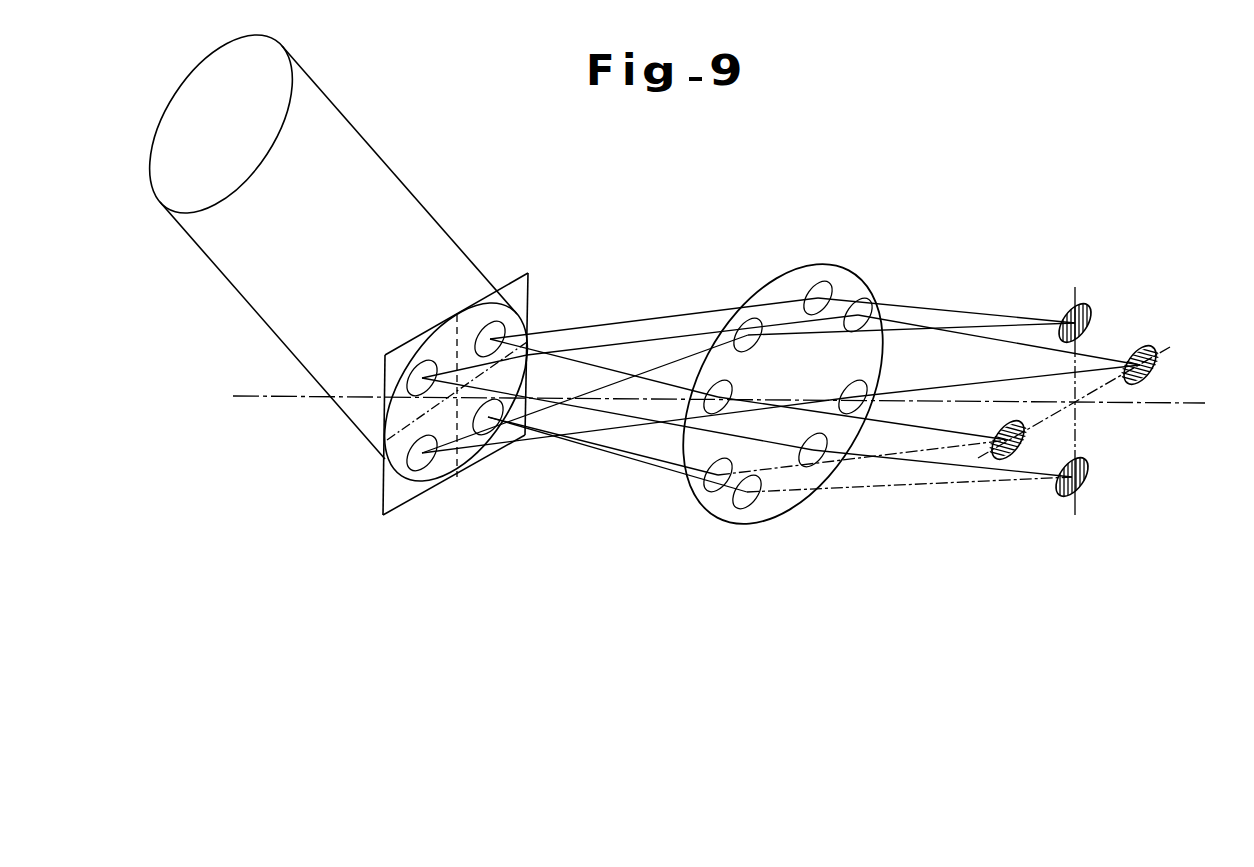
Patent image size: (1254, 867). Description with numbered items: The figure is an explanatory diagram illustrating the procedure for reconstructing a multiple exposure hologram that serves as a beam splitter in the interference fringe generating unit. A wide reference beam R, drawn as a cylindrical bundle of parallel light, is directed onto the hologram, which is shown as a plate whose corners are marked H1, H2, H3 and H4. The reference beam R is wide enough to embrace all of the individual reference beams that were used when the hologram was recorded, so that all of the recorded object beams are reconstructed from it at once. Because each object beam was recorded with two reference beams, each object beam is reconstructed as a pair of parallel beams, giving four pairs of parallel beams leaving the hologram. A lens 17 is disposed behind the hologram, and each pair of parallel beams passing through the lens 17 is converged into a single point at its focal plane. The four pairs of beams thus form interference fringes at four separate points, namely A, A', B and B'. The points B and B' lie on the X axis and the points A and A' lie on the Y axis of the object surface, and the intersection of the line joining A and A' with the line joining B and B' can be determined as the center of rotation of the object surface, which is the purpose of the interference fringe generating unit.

The reference beam R is at (318, 234).
The hologram H1 is at (477, 308).
The hologram H2 is at (382, 417).
The hologram H3 is at (434, 487).
The hologram H4 is at (532, 380).
The lens 17 is at (776, 289).
The point A is at (1089, 308).
The point A' is at (1097, 483).
The point B is at (997, 433).
The point B' is at (1163, 365).